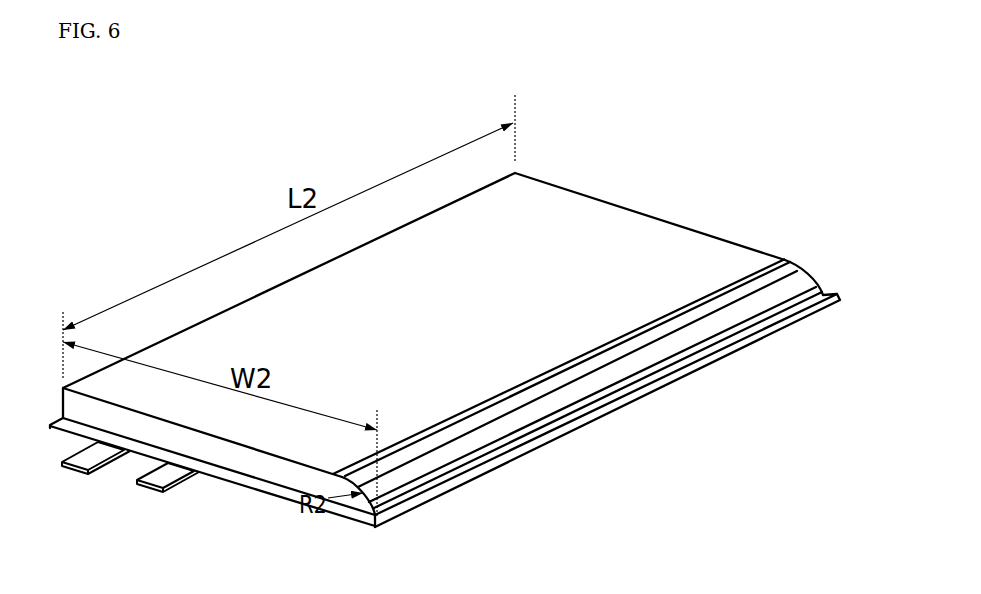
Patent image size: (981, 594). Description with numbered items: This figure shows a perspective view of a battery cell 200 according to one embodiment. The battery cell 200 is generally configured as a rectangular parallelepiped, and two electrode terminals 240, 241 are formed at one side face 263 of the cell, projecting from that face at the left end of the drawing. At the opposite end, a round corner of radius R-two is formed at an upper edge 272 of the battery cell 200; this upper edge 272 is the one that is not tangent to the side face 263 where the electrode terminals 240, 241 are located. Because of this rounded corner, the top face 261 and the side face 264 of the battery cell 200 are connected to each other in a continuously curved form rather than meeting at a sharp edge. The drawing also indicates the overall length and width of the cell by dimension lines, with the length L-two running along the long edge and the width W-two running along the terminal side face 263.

The battery cell 200 is at (168, 212).
The electrode terminal 240 is at (83, 465).
The electrode terminal 241 is at (158, 485).
The top face 261 is at (416, 376).
The side face 263 is at (248, 466).
The side face 264 is at (593, 397).
The upper edge 272 is at (635, 358).